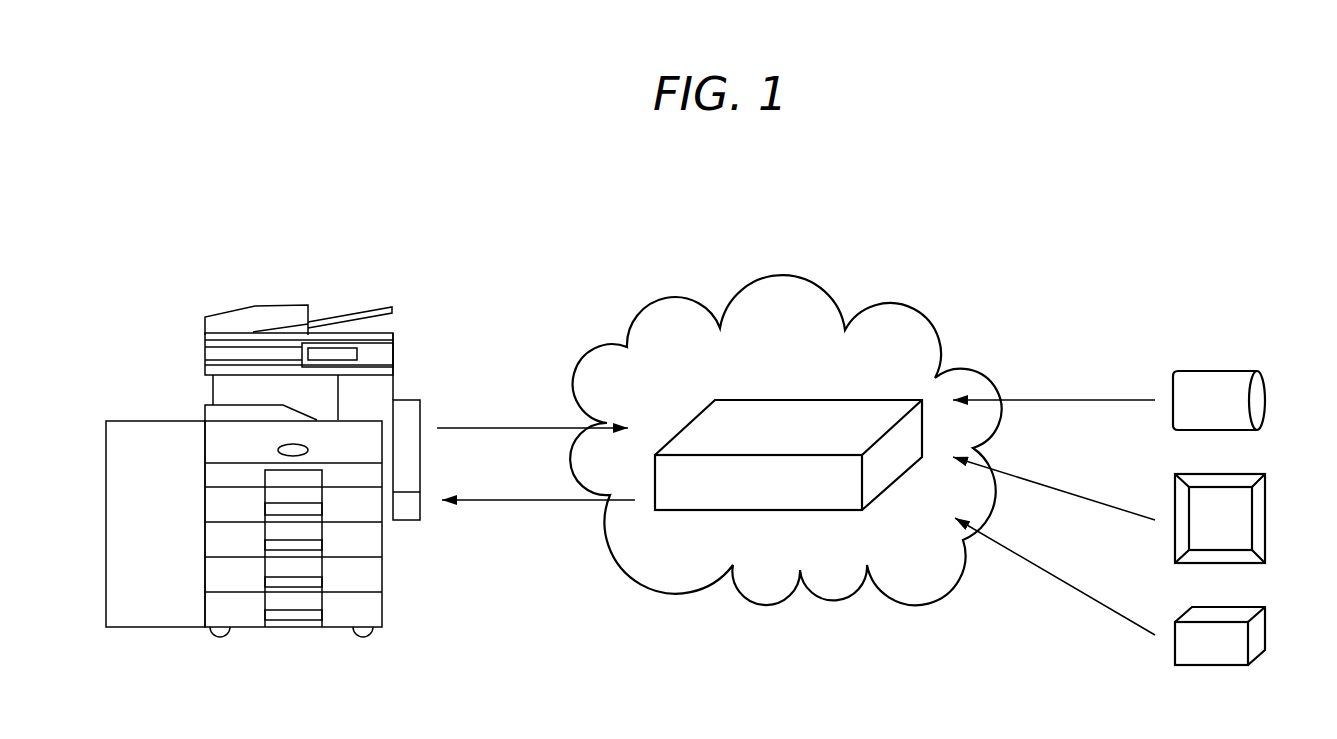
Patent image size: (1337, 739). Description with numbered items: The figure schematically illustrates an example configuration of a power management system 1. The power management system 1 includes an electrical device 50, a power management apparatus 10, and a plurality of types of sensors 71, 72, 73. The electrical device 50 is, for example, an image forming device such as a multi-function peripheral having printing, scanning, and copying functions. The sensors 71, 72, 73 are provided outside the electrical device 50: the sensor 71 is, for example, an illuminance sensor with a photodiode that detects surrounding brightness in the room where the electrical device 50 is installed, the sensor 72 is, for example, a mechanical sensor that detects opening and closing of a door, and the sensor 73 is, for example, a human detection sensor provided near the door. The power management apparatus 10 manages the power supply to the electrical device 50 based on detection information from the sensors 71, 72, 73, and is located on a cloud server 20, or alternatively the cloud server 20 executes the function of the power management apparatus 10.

The power management system 1 is at (507, 266).
The power management apparatus 10 is at (812, 400).
The cloud server 20 is at (782, 268).
The electrical device 50 is at (295, 302).
The sensor 71 is at (1268, 399).
The sensor 72 is at (1268, 518).
The sensor 73 is at (1268, 628).